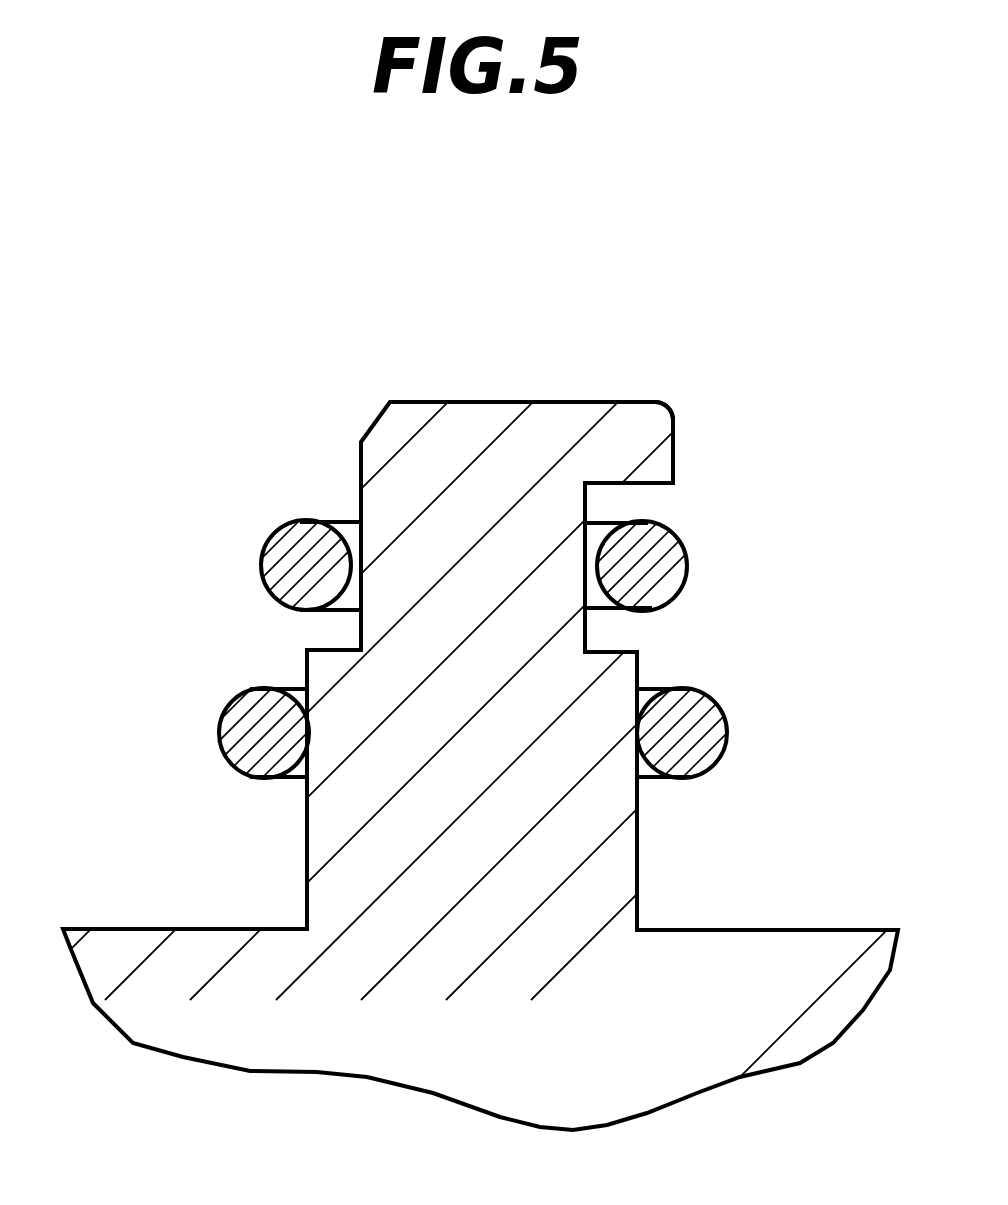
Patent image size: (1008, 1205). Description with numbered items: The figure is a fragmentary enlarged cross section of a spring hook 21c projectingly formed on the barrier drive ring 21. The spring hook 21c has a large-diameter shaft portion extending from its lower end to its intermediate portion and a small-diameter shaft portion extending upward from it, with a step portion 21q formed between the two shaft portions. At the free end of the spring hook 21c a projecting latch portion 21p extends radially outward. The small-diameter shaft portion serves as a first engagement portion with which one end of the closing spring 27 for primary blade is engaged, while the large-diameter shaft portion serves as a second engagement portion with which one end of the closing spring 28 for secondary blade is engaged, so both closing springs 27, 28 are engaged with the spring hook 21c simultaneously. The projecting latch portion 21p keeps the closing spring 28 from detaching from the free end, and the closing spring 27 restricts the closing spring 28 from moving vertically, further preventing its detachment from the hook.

The barrier drive ring 21 is at (795, 947).
The spring hook 21c is at (508, 402).
The projecting latch portion 21p is at (640, 427).
The step portion 21q is at (617, 652).
The closing spring for primary blade 27 is at (275, 568).
The closing spring for secondary blade 28 is at (243, 733).